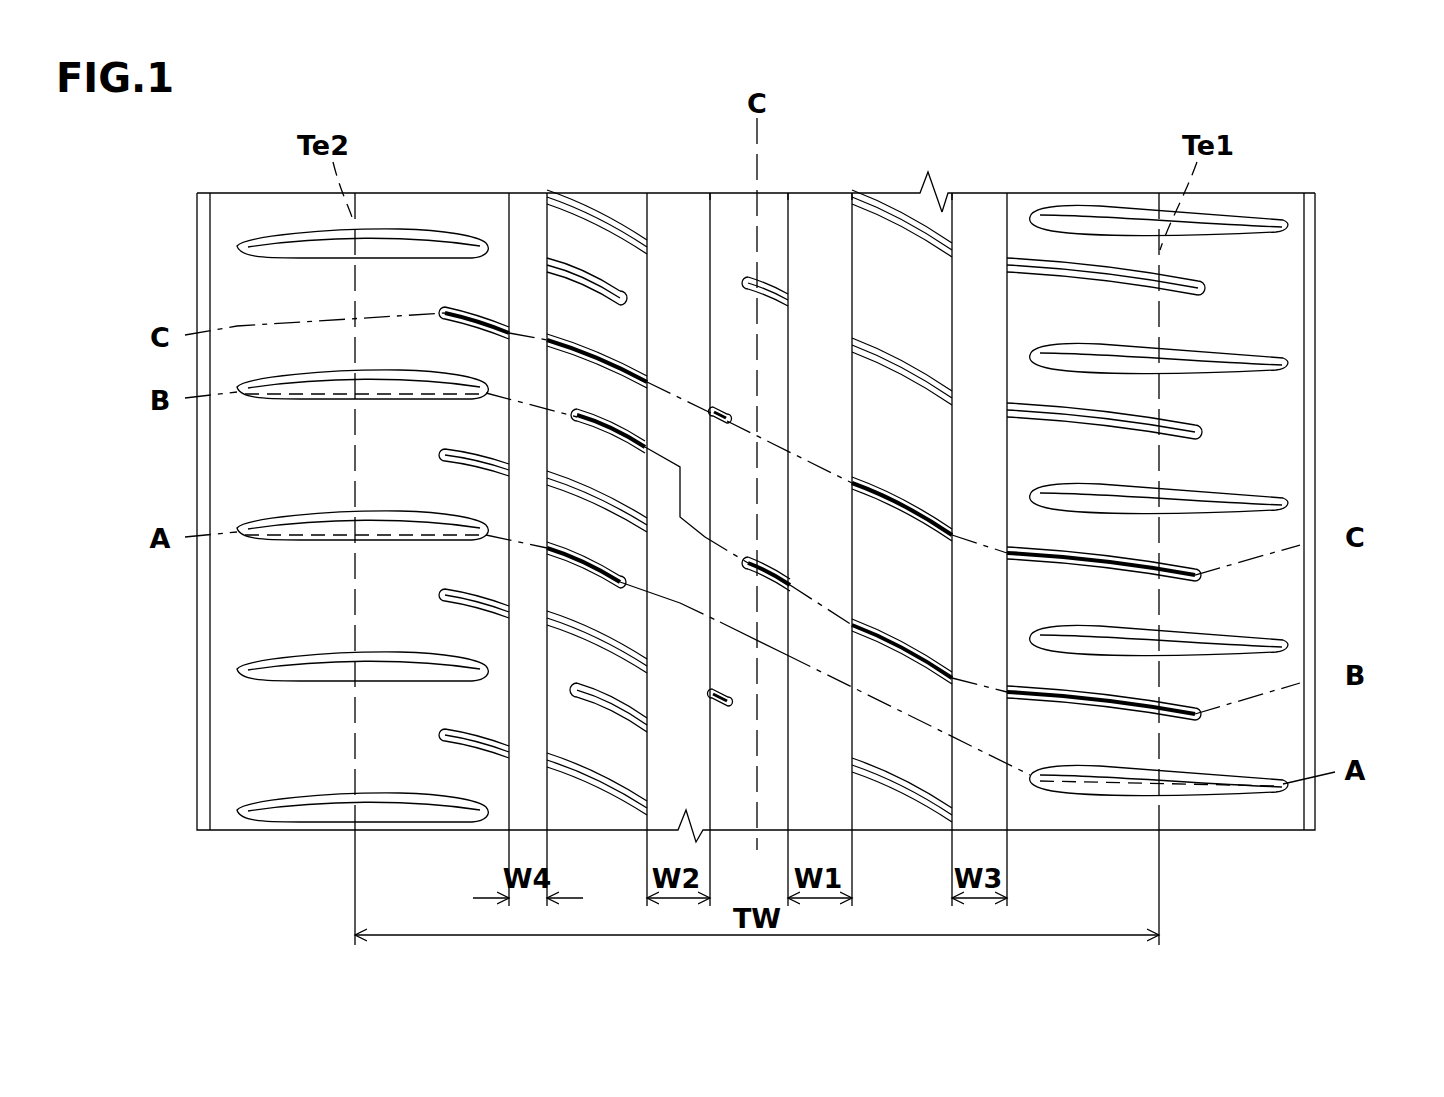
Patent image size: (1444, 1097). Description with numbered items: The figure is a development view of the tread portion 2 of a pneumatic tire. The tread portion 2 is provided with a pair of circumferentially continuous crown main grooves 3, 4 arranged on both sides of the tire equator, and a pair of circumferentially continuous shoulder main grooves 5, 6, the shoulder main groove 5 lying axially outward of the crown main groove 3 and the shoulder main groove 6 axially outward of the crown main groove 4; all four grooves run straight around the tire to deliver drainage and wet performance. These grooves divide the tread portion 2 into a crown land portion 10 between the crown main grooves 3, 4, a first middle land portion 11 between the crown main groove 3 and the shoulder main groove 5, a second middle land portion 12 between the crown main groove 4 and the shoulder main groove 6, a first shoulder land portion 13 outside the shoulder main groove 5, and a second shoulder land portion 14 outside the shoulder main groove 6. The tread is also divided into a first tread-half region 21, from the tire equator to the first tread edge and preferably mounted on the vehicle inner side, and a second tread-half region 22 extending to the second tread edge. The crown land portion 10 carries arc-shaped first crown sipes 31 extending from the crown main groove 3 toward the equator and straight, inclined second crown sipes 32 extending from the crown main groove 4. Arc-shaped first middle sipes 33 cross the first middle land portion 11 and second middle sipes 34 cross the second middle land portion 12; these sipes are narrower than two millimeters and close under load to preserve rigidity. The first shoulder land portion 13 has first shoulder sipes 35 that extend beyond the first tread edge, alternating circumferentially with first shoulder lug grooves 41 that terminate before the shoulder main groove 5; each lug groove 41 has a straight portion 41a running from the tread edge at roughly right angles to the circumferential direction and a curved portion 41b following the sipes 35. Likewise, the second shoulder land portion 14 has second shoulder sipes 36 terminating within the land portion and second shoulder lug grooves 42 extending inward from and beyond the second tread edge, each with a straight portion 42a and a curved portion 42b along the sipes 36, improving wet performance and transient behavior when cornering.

The tread portion 2 is at (1150, 155).
The first crown main groove 3 is at (818, 223).
The second crown main groove 4 is at (675, 243).
The first shoulder main groove 5 is at (988, 225).
The second shoulder main groove 6 is at (528, 215).
The crown land portion 10 is at (775, 225).
The first middle land portion 11 is at (885, 275).
The second middle land portion 12 is at (597, 250).
The first shoulder land portion 13 is at (1090, 265).
The second shoulder land portion 14 is at (408, 275).
The first tread-half region 21 is at (948, 155).
The second tread-half region 22 is at (637, 155).
The first crown sipe 31 is at (768, 570).
The second crown sipe 32 is at (718, 410).
The first middle sipe 33 is at (907, 373).
The second middle sipe 34 is at (585, 358).
The first shoulder sipe 35 is at (1150, 428).
The second shoulder sipe 36 is at (445, 313).
The first shoulder lug groove 41 is at (1138, 783).
The straight portion 41a is at (1038, 640).
The curved portion 41b is at (1092, 680).
The second shoulder lug groove 42 is at (372, 527).
The straight portion 42a is at (377, 668).
The curved portion 42b is at (470, 672).